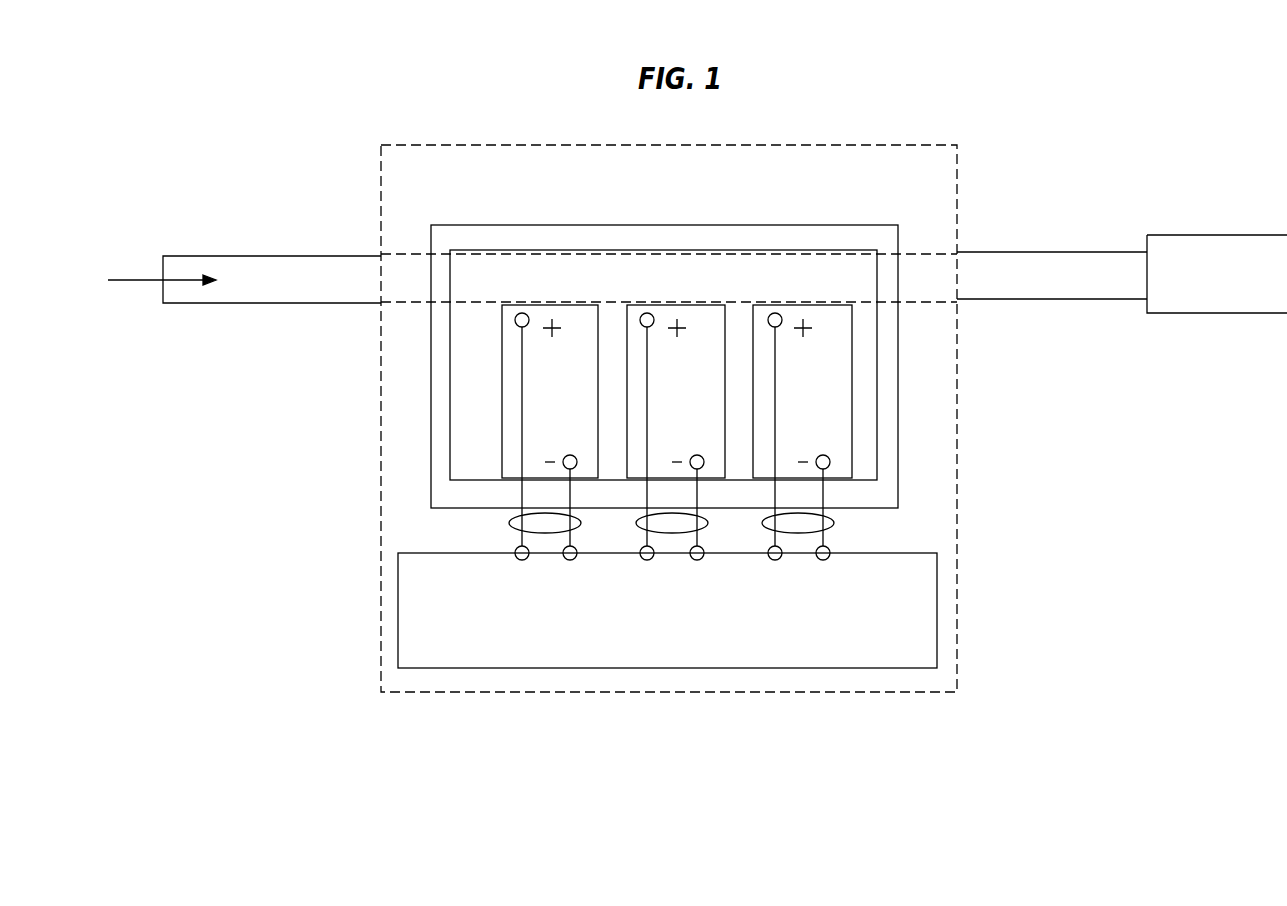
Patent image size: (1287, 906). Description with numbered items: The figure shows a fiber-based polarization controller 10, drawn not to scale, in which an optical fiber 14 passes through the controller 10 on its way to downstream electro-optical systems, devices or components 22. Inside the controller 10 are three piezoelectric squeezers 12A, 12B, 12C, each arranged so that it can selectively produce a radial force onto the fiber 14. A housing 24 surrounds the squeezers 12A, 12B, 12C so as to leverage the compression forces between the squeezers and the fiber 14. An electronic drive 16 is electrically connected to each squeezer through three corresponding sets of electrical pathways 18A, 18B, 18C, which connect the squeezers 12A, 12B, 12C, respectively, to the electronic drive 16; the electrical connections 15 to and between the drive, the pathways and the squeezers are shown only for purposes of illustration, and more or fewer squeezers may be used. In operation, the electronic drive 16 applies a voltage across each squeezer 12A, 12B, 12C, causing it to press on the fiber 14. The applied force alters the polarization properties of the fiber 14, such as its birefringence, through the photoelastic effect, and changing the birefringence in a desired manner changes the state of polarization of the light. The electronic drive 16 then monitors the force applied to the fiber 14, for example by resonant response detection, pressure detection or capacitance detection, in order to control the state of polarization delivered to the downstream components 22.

The polarization controller 10 is at (925, 184).
The first piezoelectric squeezer 12A is at (575, 397).
The second piezoelectric squeezer 12B is at (701, 397).
The third piezoelectric squeezer 12C is at (827, 397).
The optical fiber 14 is at (300, 266).
The electrical connections 15 is at (515, 320).
The electronic drive 16 is at (672, 657).
The first set of electrical pathways 18A is at (508, 522).
The second set of electrical pathways 18B is at (708, 523).
The third set of electrical pathways 18C is at (835, 523).
The downstream electro-optical component 22 is at (128, 281).
The housing 24 is at (888, 438).